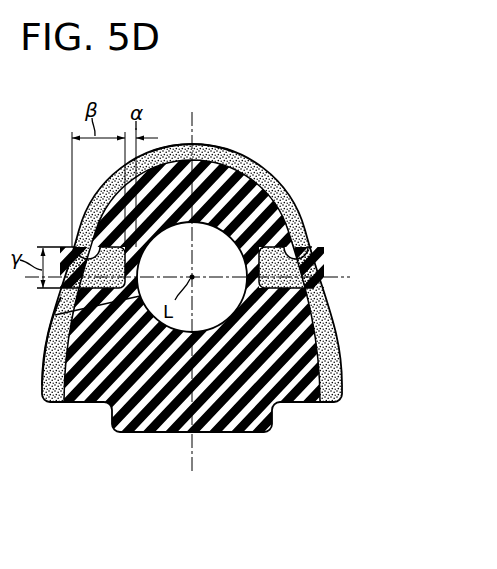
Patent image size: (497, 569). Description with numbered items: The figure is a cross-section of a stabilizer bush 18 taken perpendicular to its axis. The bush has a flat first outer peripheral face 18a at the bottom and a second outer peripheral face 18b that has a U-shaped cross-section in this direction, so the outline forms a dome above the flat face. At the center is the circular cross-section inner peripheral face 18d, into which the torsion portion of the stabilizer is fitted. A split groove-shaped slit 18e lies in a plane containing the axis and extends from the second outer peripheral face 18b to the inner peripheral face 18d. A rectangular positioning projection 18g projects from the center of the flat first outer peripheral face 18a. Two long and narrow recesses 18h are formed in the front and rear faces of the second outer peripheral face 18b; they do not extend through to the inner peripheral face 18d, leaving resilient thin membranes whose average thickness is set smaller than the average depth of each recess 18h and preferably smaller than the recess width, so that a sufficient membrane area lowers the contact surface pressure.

The stabilizer bush 18 is at (273, 163).
The first outer peripheral face 18a is at (88, 403).
The second outer peripheral face 18b is at (214, 144).
The inner peripheral face 18d is at (151, 232).
The slit 18e is at (55, 314).
The positioning projection 18g is at (225, 433).
The recess 18h is at (70, 250).